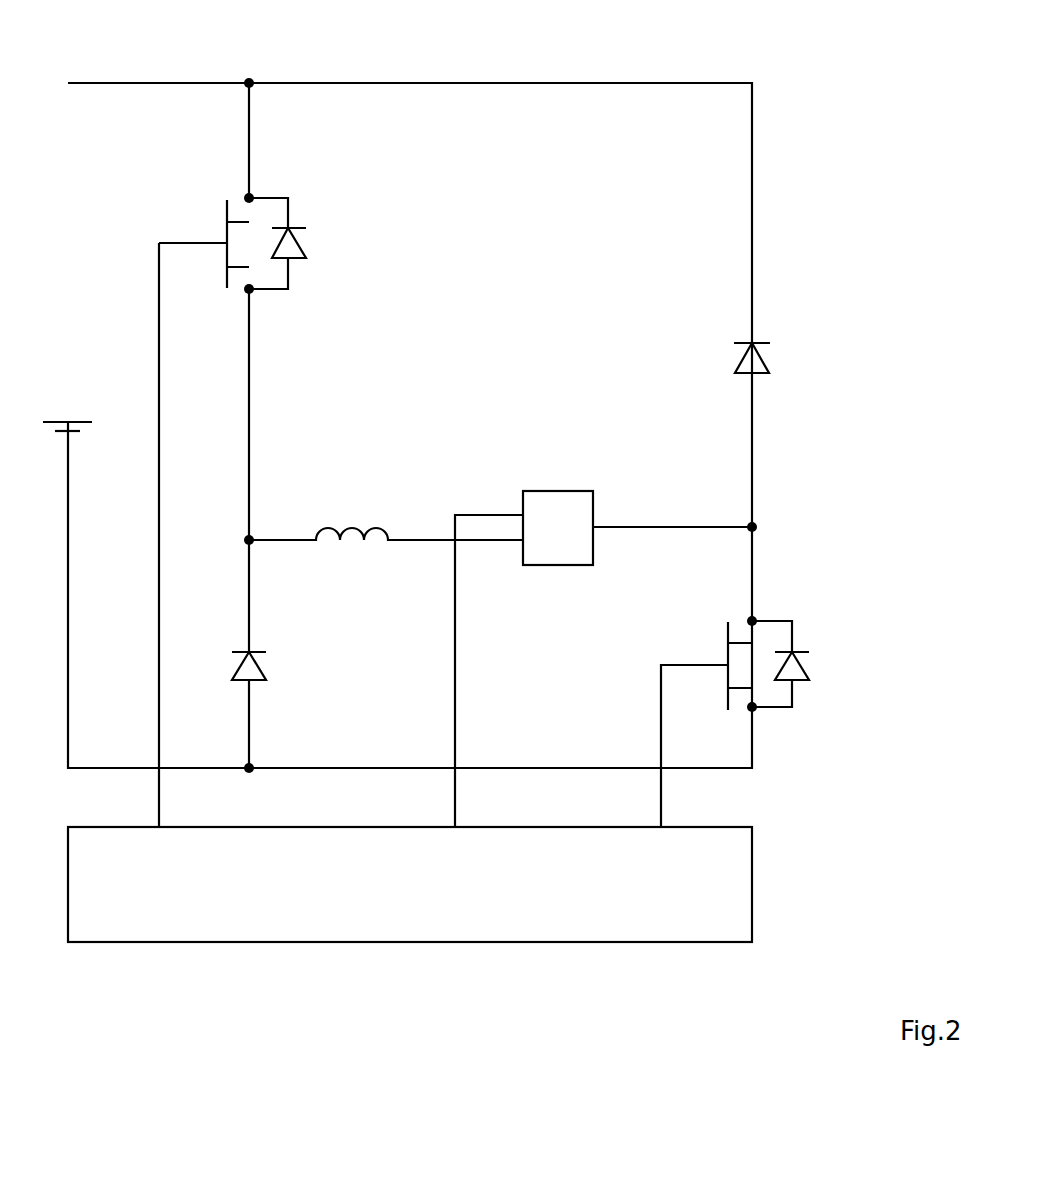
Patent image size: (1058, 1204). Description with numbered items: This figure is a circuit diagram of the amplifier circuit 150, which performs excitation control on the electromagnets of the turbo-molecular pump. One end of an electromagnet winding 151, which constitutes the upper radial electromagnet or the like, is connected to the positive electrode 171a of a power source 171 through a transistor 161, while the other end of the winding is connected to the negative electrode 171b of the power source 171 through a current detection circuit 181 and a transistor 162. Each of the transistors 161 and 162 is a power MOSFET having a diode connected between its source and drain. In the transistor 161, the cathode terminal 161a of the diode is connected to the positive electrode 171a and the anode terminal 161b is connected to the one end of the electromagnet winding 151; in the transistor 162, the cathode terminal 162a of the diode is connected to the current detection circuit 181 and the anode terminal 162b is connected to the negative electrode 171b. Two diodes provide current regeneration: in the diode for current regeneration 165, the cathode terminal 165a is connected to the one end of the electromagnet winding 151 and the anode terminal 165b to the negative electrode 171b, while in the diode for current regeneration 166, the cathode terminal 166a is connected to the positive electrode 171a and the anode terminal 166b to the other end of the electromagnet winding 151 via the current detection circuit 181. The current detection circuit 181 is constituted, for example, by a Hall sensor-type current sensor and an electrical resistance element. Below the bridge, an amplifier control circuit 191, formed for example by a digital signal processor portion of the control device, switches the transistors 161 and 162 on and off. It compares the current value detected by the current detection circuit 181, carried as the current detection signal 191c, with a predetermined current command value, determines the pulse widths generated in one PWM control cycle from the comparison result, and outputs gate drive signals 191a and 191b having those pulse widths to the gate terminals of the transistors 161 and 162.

The amplifier circuit 150 is at (432, 52).
The electromagnet winding 151 is at (352, 527).
The transistor 161 is at (232, 243).
The cathode terminal 161a is at (290, 227).
The anode terminal 161b is at (292, 258).
The transistor 162 is at (768, 665).
The cathode terminal 162a is at (794, 651).
The anode terminal 162b is at (796, 681).
The diode for current regeneration 165 is at (259, 663).
The cathode terminal 165a is at (252, 652).
The anode terminal 165b is at (254, 681).
The diode for current regeneration 166 is at (762, 358).
The cathode terminal 166a is at (755, 343).
The anode terminal 166b is at (757, 374).
The power source 171 is at (85, 424).
The positive electrode 171a is at (70, 372).
The negative electrode 171b is at (70, 480).
The current detection circuit 181 is at (560, 490).
The amplifier control circuit 191 is at (754, 882).
The gate drive signal 191a is at (161, 790).
The gate drive signal 191b is at (663, 790).
The current detection signal 191c is at (457, 790).